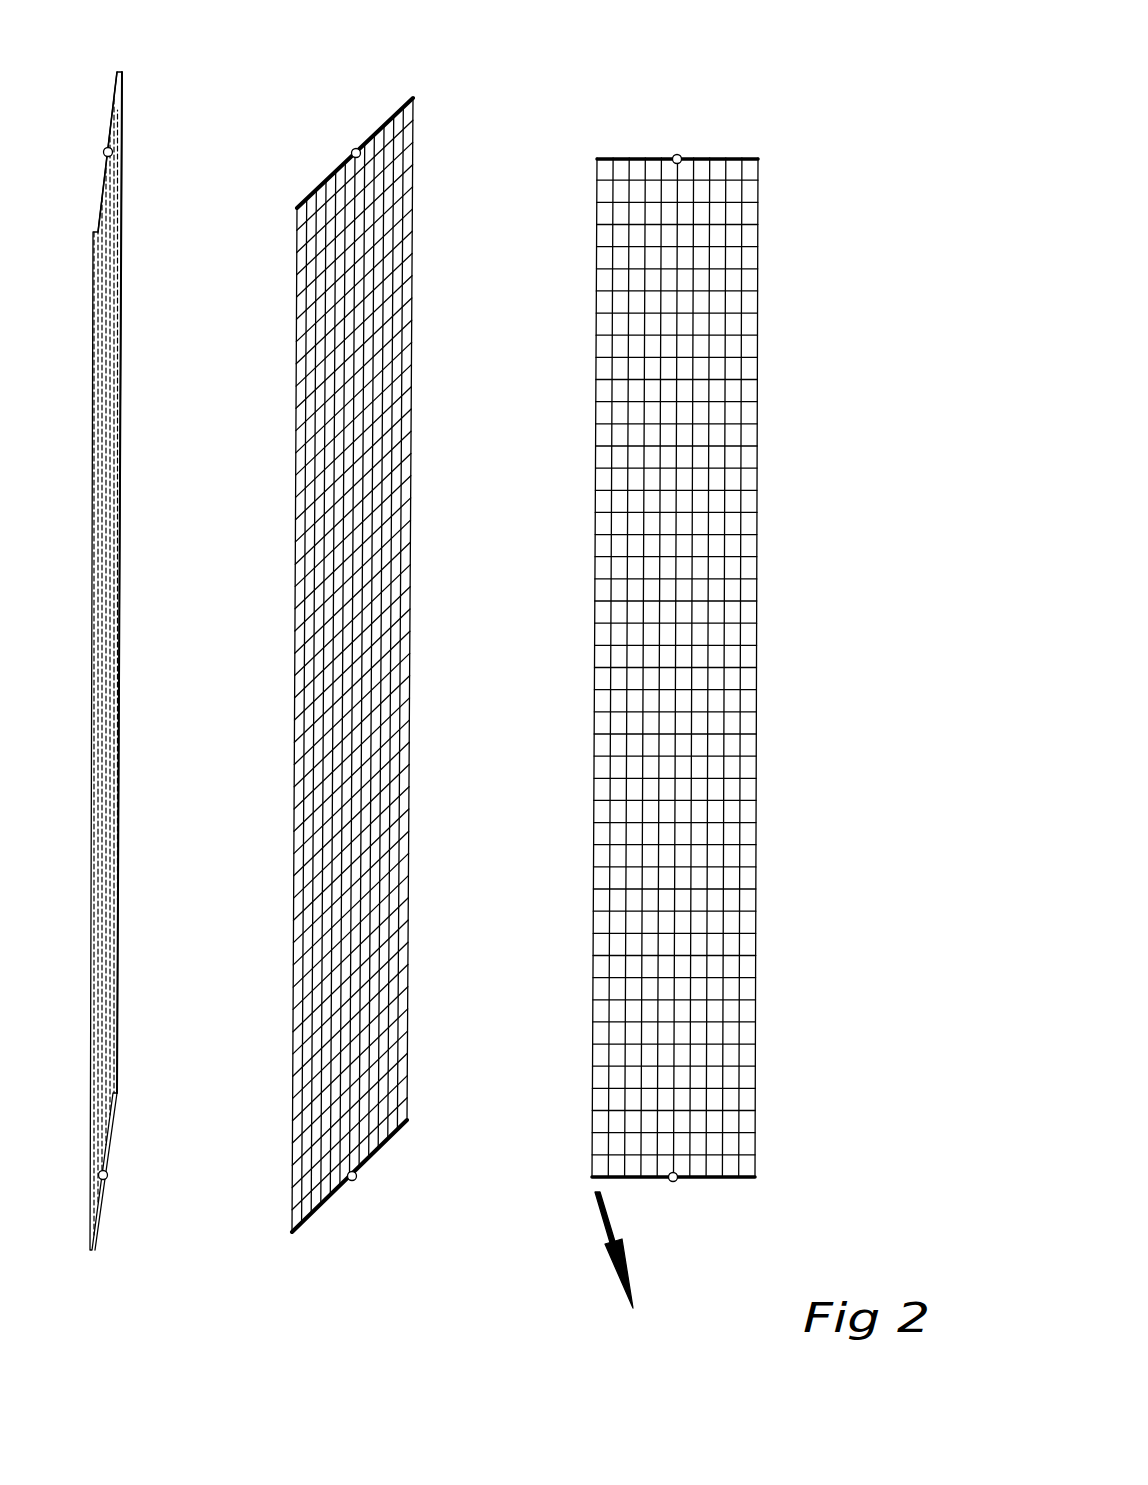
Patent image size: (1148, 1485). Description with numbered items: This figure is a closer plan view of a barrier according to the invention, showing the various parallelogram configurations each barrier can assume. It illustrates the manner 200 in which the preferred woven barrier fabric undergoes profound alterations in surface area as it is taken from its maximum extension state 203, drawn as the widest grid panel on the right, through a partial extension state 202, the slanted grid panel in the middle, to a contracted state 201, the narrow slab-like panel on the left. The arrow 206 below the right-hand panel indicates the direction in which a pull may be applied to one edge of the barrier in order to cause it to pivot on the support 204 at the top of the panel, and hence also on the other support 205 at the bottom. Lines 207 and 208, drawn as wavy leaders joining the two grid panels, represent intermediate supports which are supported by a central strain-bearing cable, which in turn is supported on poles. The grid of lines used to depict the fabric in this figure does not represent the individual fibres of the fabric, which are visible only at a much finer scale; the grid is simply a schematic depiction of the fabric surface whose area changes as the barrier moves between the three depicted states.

The manner 200 is at (868, 47).
The contracted state 201 is at (120, 372).
The partial extension state 202 is at (411, 338).
The maximum extension state 203 is at (850, 280).
The support 204 is at (676, 155).
The other support 205 is at (735, 1180).
The arrow 206 is at (612, 1276).
The line representing intermediate support 207 is at (595, 833).
The line representing intermediate support 208 is at (597, 490).